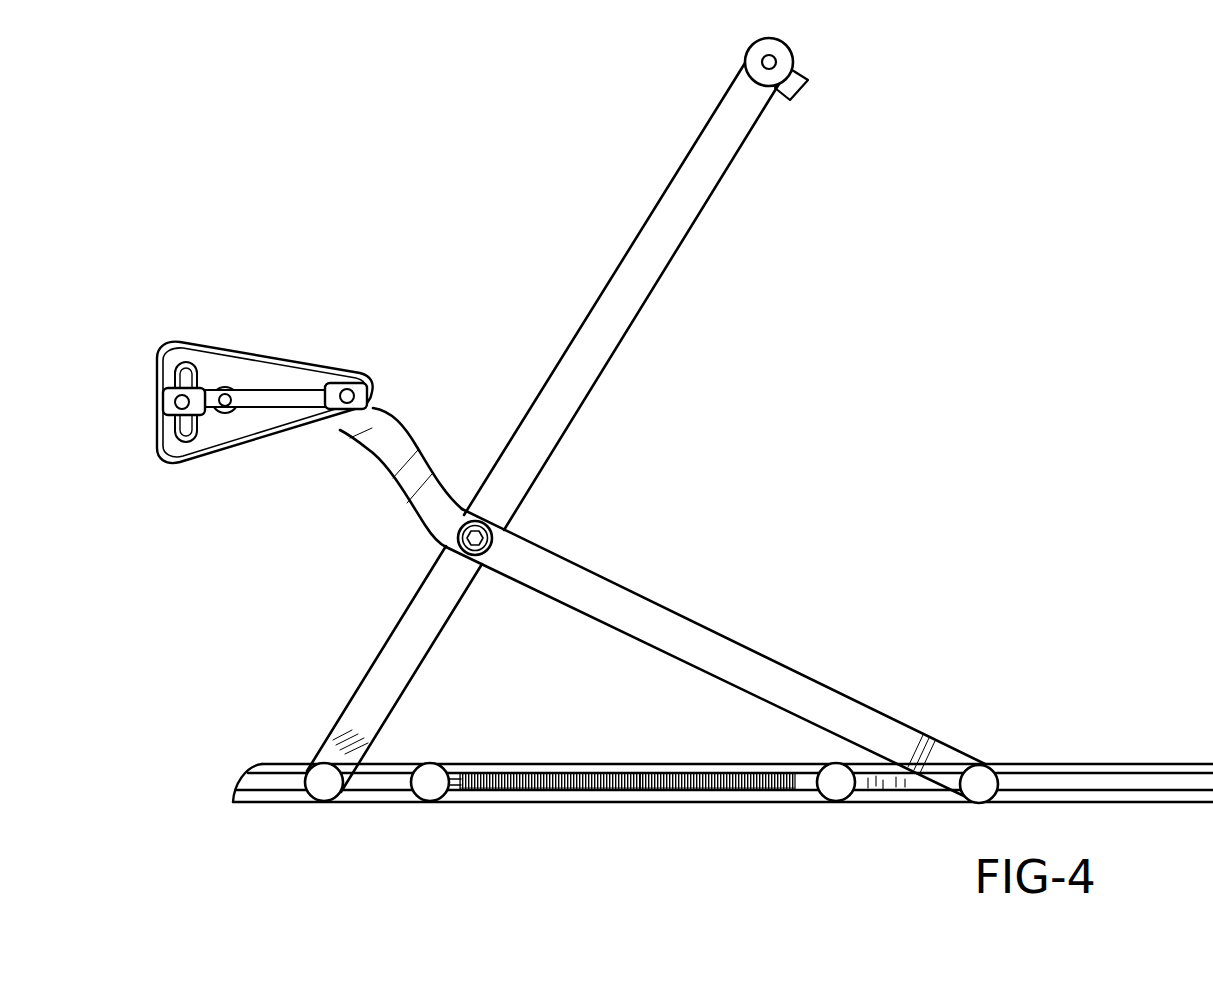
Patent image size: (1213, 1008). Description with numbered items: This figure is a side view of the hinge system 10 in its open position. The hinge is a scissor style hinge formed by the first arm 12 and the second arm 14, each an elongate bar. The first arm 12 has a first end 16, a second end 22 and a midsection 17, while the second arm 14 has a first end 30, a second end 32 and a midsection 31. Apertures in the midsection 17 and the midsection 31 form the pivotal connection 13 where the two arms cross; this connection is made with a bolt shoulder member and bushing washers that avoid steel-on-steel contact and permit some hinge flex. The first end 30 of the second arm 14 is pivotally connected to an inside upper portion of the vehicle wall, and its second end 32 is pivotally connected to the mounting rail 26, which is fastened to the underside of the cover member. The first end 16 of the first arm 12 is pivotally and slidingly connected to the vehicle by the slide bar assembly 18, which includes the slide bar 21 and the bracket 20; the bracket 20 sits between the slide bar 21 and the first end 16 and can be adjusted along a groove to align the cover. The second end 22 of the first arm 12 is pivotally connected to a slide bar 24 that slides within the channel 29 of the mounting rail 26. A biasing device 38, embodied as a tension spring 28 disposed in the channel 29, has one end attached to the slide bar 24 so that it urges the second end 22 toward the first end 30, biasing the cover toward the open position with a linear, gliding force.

The hinge system 10 is at (1016, 334).
The first arm 12 is at (713, 650).
The pivotal connection 13 is at (408, 552).
The second arm 14 is at (590, 370).
The first end of the first arm 16 is at (379, 430).
The midsection of the first arm 17 is at (523, 555).
The slide bar assembly 18 is at (233, 292).
The bracket 20 is at (270, 430).
The slide bar 21 is at (273, 397).
The second end of the first arm 22 is at (948, 755).
The slide bar 24 is at (882, 775).
The mounting rail 26 is at (278, 800).
The spring 28 is at (713, 783).
The channel 29 is at (385, 787).
The first end of the second arm 30 is at (740, 100).
The midsection of the second arm 31 is at (507, 487).
The second end of the second arm 32 is at (332, 752).
The biasing device 38 is at (627, 780).